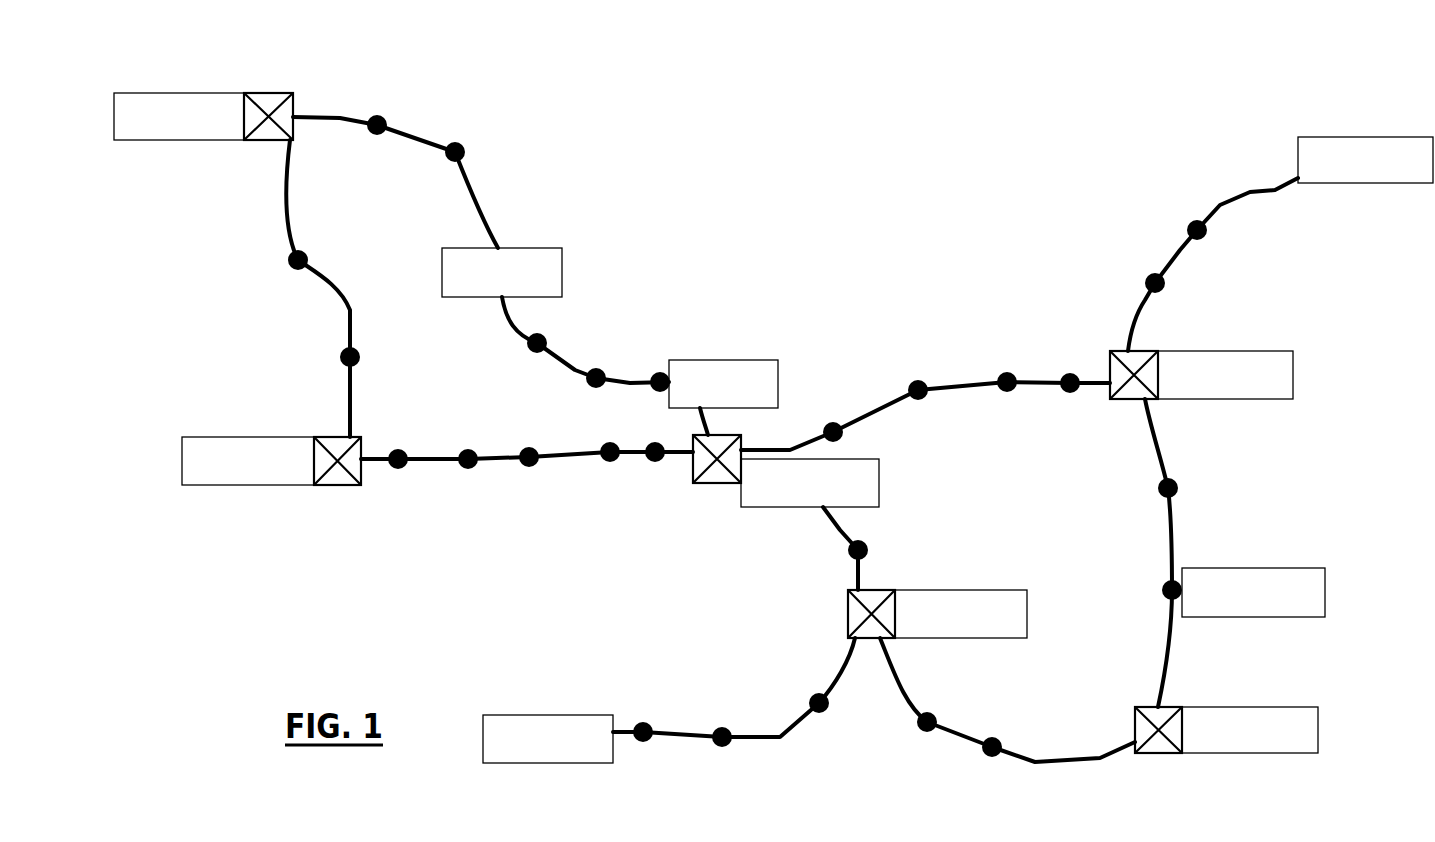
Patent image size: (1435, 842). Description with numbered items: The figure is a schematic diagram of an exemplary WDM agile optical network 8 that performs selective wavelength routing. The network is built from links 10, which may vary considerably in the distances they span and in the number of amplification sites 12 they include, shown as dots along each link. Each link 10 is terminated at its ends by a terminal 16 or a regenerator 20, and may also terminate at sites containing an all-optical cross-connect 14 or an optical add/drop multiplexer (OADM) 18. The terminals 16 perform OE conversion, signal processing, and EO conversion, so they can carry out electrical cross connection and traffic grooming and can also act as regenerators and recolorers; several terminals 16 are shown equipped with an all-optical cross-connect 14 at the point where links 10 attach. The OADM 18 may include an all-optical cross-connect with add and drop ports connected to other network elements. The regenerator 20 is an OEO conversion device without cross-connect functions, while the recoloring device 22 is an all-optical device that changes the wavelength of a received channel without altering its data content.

The agile optical network 8 is at (887, 262).
The links 10 is at (470, 205).
The amplification sites 12 is at (390, 122).
The all-optical cross-connect 14 is at (295, 142).
The terminal 16 is at (208, 100).
The optical add/drop multiplexer (OADM) 18 is at (748, 364).
The regenerator 20 is at (545, 252).
The recoloring device 22 is at (879, 482).